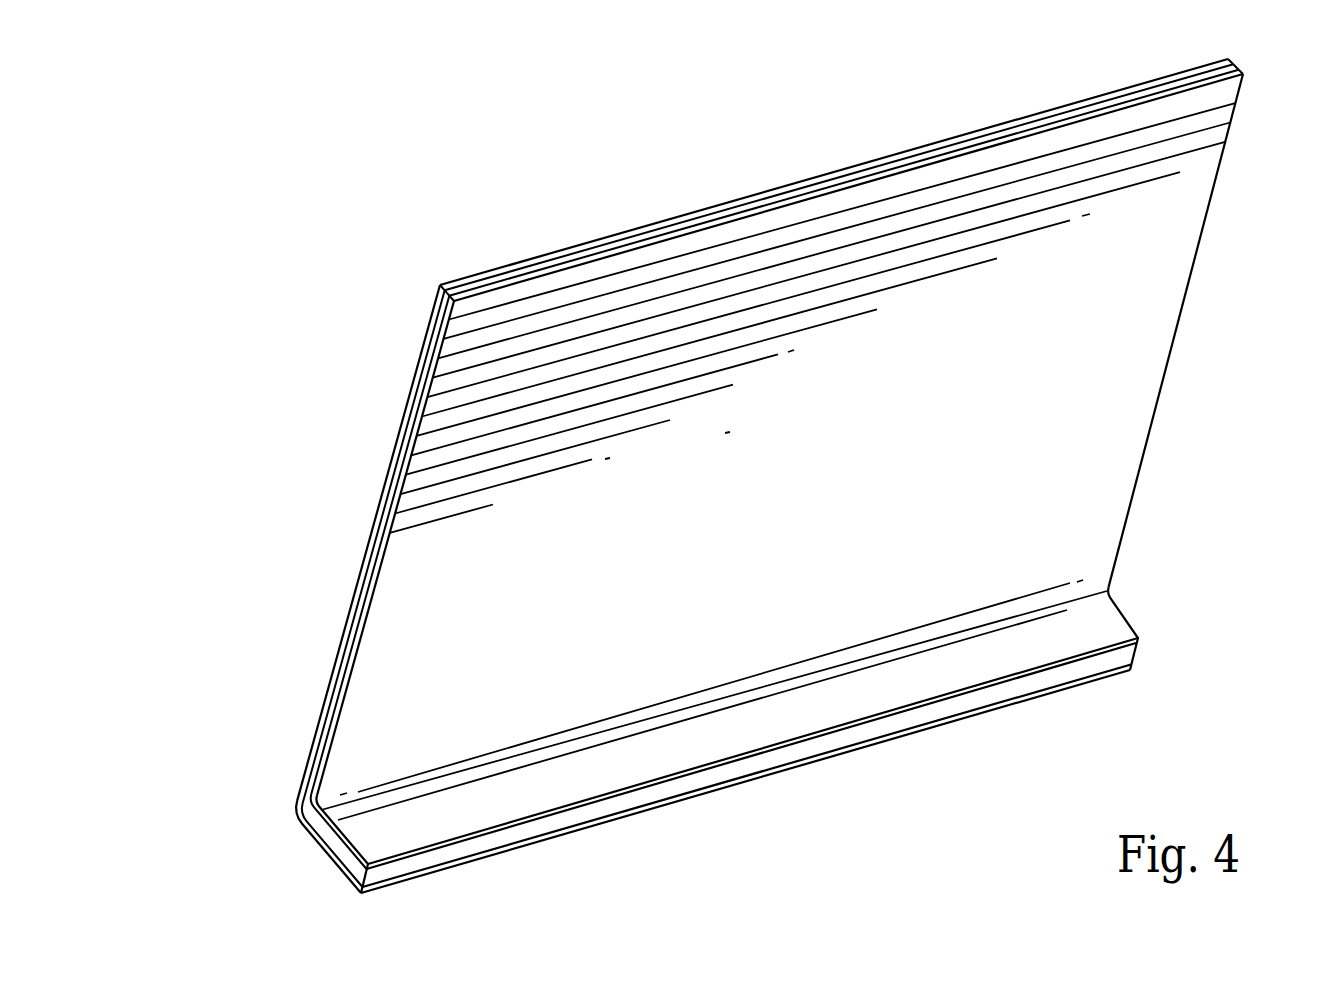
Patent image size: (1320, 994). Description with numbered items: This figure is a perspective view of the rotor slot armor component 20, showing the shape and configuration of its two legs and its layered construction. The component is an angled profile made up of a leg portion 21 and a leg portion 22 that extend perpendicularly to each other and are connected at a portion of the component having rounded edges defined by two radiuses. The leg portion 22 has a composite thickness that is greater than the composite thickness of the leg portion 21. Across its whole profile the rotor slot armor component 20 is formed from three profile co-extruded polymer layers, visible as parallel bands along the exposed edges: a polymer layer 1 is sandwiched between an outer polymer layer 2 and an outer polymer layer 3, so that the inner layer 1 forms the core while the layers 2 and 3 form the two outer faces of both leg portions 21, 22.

The polymer layer 1 is at (1235, 67).
The outer polymer layer 2 is at (1243, 74).
The outer polymer layer 3 is at (1230, 61).
The rotor slot armor component 20 is at (247, 603).
The leg portion 21 is at (413, 283).
The leg portion 22 is at (349, 910).